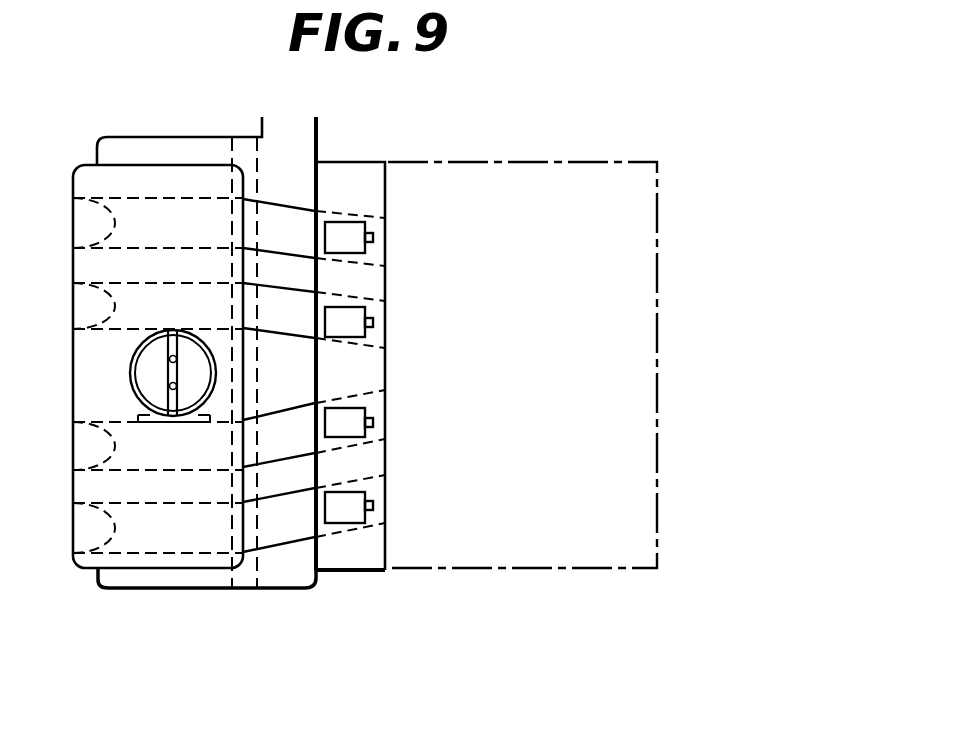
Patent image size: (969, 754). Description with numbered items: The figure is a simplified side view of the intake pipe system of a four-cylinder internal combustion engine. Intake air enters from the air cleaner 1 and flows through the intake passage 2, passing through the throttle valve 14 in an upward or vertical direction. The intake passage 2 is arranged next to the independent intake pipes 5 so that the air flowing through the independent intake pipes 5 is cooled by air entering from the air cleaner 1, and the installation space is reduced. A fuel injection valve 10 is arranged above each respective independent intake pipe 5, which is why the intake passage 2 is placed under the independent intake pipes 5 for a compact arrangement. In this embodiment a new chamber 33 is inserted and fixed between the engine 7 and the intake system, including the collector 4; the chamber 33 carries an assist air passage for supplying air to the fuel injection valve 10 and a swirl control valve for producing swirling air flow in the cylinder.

The air cleaner 1 is at (249, 592).
The intake passage 2 is at (166, 592).
The collector 4 is at (145, 162).
The independent intake pipes 5 is at (276, 210).
The engine 7 is at (591, 550).
The fuel injection valve 10 is at (346, 230).
The throttle valve 14 is at (132, 374).
The chamber 33 is at (361, 576).